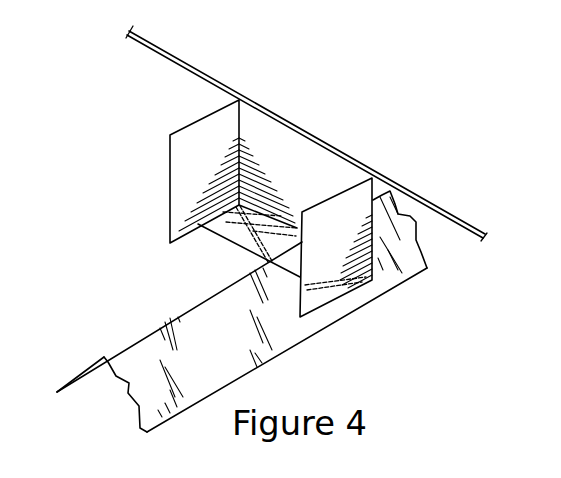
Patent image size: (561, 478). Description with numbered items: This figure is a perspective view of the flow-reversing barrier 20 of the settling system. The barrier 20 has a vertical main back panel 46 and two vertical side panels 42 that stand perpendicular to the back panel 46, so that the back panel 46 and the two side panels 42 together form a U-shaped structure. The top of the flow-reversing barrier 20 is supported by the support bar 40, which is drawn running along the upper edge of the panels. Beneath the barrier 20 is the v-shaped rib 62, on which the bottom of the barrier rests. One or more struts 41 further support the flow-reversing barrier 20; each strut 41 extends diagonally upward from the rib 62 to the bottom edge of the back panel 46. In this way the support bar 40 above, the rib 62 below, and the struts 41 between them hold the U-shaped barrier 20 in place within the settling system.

The flow-reversing barrier 20 is at (337, 115).
The support bar 40 is at (170, 57).
The strut 41 is at (243, 244).
The vertical side panel 42 is at (199, 155).
The vertical main back panel 46 is at (326, 173).
The v-shaped rib 62 is at (131, 340).